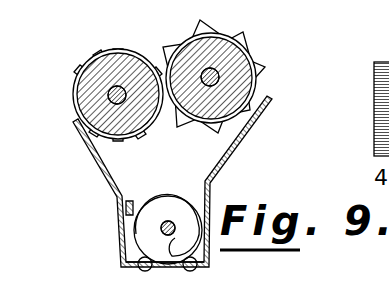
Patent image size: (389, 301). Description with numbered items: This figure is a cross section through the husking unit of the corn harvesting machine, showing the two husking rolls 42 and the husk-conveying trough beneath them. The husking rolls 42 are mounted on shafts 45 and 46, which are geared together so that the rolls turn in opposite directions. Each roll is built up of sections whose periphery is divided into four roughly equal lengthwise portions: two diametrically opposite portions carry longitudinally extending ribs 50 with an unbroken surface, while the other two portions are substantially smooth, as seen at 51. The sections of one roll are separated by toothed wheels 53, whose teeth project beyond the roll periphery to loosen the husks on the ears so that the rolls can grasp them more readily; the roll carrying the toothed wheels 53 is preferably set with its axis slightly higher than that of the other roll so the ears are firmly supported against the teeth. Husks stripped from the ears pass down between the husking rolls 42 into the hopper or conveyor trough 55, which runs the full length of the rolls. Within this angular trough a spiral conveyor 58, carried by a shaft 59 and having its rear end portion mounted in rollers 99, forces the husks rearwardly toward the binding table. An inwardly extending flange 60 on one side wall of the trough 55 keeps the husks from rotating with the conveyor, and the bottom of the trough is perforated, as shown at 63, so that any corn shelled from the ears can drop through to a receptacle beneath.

The husking rolls 42 is at (132, 82).
The shaft 45 is at (234, 72).
The shaft 46 is at (110, 98).
The longitudinally extending ribs 50 is at (126, 50).
The smooth portions 51 is at (246, 54).
The toothed wheels 53 is at (215, 33).
The hopper or conveyor trough 55 is at (212, 195).
The spiral conveyor 58 is at (171, 200).
The shaft 59 is at (162, 232).
The inwardly extending flange 60 is at (131, 210).
The perforated bottom 63 is at (165, 268).
The rollers 99 is at (140, 270).